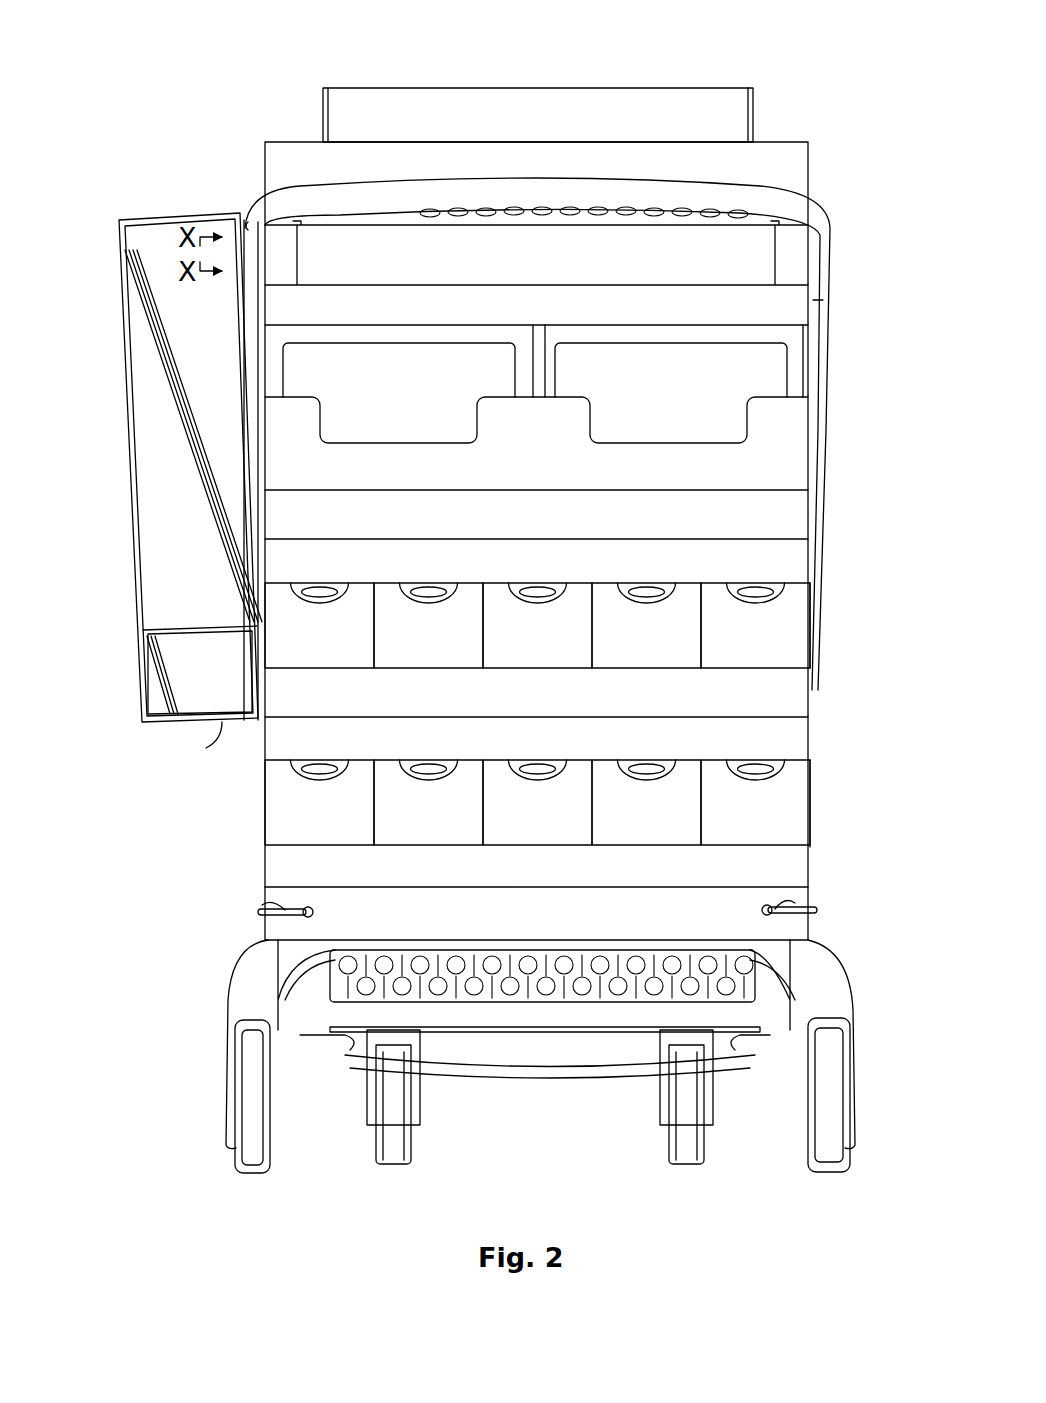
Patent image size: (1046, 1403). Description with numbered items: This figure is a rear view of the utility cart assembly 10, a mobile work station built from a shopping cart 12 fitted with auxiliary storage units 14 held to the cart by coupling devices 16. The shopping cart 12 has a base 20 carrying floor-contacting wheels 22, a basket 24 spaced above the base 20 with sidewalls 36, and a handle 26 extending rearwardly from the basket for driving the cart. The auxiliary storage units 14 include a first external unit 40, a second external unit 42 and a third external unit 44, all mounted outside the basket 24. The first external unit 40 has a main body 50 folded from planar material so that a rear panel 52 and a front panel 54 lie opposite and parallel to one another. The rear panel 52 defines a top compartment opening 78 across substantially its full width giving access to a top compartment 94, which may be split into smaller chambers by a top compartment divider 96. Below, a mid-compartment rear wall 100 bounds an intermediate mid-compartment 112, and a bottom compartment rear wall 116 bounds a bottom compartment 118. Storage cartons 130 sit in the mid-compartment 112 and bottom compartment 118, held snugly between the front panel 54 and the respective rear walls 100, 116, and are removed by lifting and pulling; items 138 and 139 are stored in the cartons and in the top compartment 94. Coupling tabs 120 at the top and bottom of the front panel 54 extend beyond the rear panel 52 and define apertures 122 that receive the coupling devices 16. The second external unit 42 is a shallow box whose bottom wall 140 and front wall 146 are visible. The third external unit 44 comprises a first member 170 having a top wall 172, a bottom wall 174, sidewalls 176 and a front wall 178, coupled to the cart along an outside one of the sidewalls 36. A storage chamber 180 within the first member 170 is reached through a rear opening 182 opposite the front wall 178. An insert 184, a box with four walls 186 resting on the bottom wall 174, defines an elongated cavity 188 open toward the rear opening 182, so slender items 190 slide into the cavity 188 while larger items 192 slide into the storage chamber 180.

The utility cart assembly 10 is at (233, 78).
The shopping cart 12 is at (543, 1058).
The auxiliary storage units 14 is at (210, 376).
The coupling devices 16 is at (262, 902).
The base 20 is at (250, 985).
The wheels 22 is at (405, 1150).
The basket 24 is at (815, 352).
The handle 26 is at (795, 210).
The basket sidewalls 36 is at (822, 476).
The first external unit 40 is at (788, 518).
The second external unit 42 is at (760, 270).
The third external unit 44 is at (128, 222).
The main body 50 is at (778, 447).
The rear panel 52 is at (788, 700).
The front panel 54 is at (797, 372).
The top compartment opening 78 is at (795, 327).
The top compartment 94 is at (275, 388).
The top compartment divider 96 is at (540, 342).
The mid-compartment rear wall 100 is at (778, 680).
The mid-compartment 112 is at (785, 565).
The bottom compartment rear wall 116 is at (783, 860).
The bottom compartment 118 is at (770, 740).
The coupling tabs 120 is at (765, 918).
The apertures 122 is at (313, 913).
The storage cartons 130 is at (323, 652).
The items 138 is at (765, 392).
The items 139 is at (765, 595).
The bottom wall 140 is at (760, 245).
The front wall 146 is at (738, 217).
The first member 170 is at (125, 268).
The top wall 172 is at (175, 213).
The bottom wall 174 is at (158, 733).
The sidewalls 176 is at (243, 323).
The front wall 178 is at (140, 392).
The storage chamber 180 is at (155, 493).
The rear opening 182 is at (150, 597).
The insert 184 is at (186, 620).
The walls 186 is at (228, 722).
The elongated cavity 188 is at (182, 655).
The items 190 is at (150, 688).
The items 192 is at (158, 360).